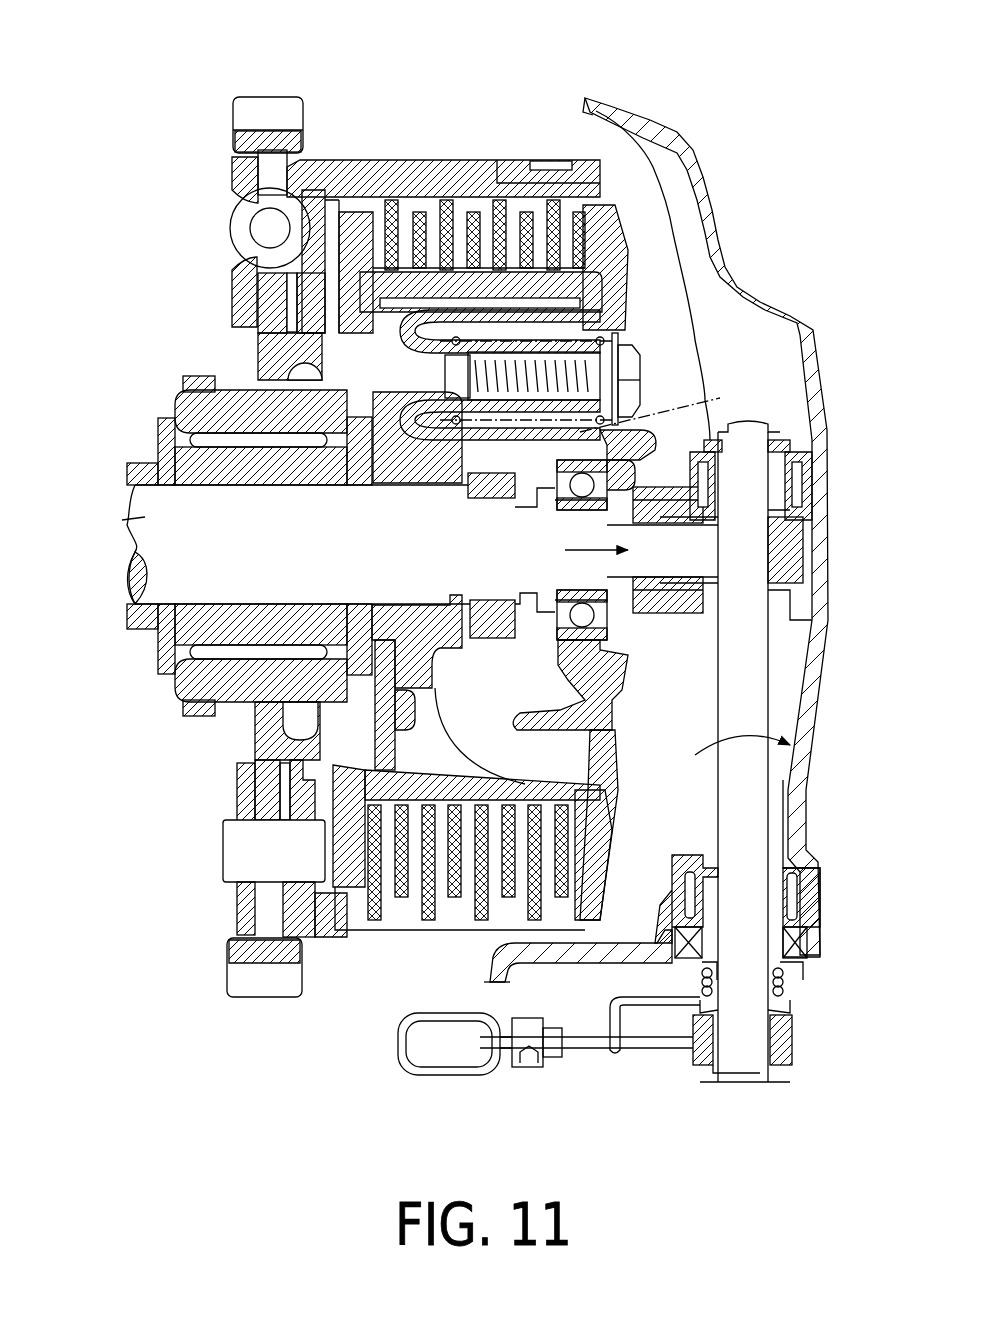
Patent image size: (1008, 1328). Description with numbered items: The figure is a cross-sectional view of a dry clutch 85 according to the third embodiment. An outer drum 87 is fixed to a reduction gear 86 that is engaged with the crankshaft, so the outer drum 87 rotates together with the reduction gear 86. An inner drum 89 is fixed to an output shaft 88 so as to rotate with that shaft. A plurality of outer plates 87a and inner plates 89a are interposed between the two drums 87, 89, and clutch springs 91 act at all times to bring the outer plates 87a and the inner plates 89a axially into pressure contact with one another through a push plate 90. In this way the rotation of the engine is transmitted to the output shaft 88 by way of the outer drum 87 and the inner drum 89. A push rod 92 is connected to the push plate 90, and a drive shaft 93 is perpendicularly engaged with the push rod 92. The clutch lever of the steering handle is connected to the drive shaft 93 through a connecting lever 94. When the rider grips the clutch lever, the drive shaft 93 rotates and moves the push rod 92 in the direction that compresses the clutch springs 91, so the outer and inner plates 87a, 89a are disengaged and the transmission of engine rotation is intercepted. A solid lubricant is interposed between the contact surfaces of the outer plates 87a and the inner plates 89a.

The dry clutch 85 is at (525, 132).
The reduction gear 86 is at (235, 137).
The outer drum 87 is at (392, 155).
The outer plates 87a is at (505, 205).
The output shaft 88 is at (127, 524).
The inner drum 89 is at (600, 292).
The inner plates 89a is at (385, 265).
The push plate 90 is at (635, 309).
The clutch springs 91 is at (595, 426).
The push rod 92 is at (675, 602).
The drive shaft 93 is at (790, 701).
The connecting lever 94 is at (400, 1067).